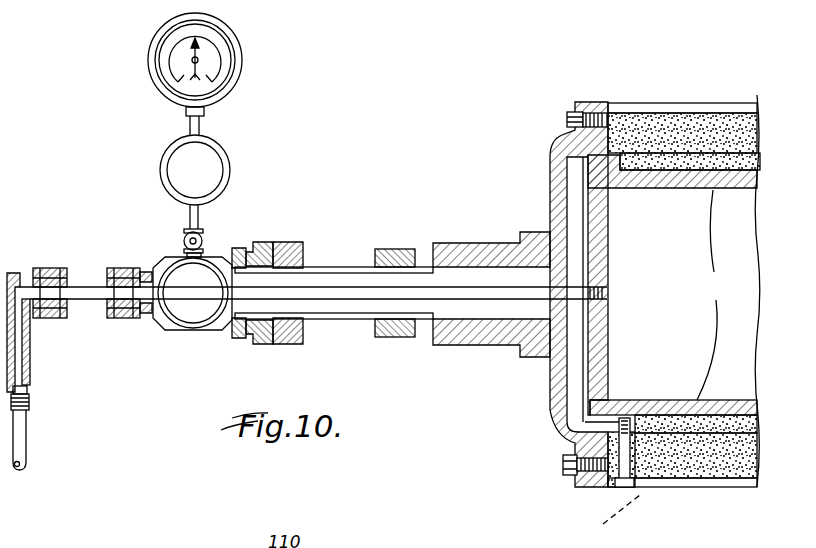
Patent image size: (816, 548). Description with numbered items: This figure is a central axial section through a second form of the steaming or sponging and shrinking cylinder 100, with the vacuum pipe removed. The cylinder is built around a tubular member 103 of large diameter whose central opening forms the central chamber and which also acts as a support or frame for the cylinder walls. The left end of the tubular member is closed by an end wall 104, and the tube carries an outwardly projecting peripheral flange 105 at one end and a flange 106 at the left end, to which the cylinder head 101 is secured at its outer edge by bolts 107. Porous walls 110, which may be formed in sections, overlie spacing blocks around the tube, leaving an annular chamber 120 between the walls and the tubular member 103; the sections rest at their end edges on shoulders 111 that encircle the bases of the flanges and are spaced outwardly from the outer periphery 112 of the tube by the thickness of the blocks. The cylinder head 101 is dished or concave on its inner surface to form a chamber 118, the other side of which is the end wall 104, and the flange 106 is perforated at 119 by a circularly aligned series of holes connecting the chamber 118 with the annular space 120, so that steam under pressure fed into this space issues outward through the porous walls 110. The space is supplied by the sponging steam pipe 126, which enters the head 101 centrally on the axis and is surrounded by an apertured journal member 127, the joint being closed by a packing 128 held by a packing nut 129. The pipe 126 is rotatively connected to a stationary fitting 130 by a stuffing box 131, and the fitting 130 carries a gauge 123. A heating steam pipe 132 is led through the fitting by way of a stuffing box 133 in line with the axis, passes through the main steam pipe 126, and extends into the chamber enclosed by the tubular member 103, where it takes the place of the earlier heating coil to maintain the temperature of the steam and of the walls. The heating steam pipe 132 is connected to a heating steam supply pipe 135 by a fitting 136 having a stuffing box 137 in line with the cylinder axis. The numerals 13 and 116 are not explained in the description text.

The cylinder 100 is at (712, 125).
The cylinder head 101 is at (548, 190).
The tubular member 103 is at (728, 291).
The end wall 104 is at (608, 262).
The peripheral flange 105 is at (714, 529).
The flange 106 is at (598, 485).
The bolts 107 is at (756, 540).
The porous walls 110 is at (693, 455).
The shoulders 111 is at (623, 418).
The outer periphery 112 is at (672, 384).
The furnace element 13 is at (400, 547).
The furnace element 116 is at (129, 538).
The chamber 118 is at (574, 388).
The perforations 119 is at (609, 190).
The annular chamber 120 is at (660, 152).
The gauge 123 is at (232, 84).
The sponging steam pipe 126 is at (282, 344).
The apertured journal member 127 is at (458, 243).
The packing 128 is at (392, 338).
The packing nut 129 is at (415, 338).
The stationary fitting 130 is at (178, 328).
The stuffing box 131 is at (280, 243).
The heating steam pipe 132 is at (95, 300).
The stuffing box 133 is at (124, 268).
The heating steam supply pipe 135 is at (24, 437).
The fitting 136 is at (30, 372).
The stuffing box 137 is at (40, 268).